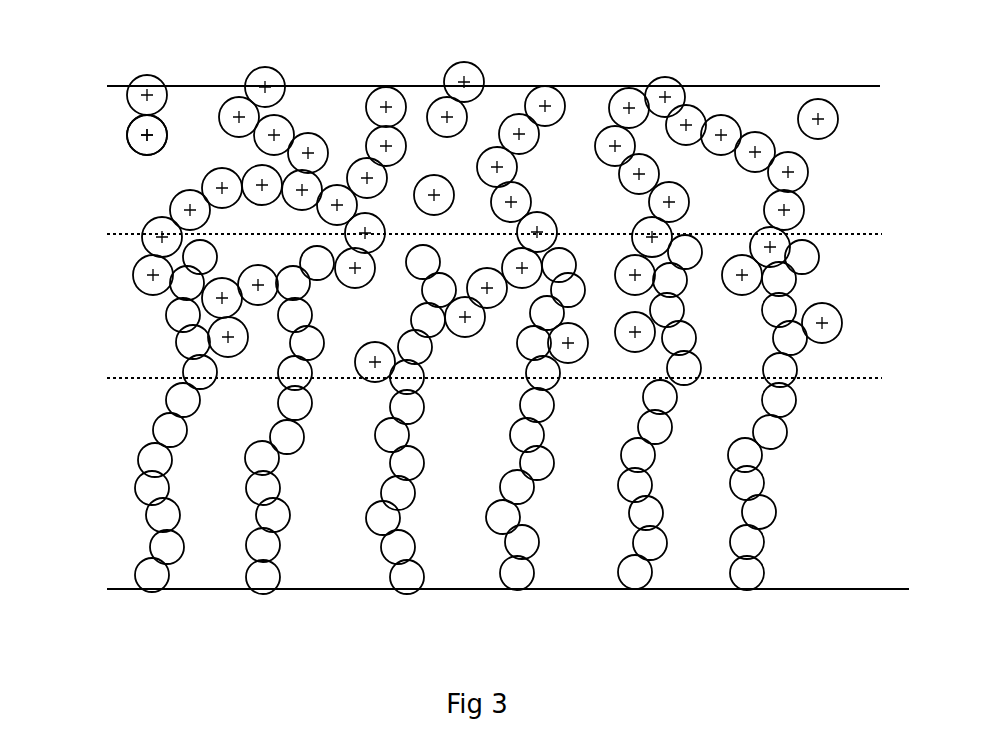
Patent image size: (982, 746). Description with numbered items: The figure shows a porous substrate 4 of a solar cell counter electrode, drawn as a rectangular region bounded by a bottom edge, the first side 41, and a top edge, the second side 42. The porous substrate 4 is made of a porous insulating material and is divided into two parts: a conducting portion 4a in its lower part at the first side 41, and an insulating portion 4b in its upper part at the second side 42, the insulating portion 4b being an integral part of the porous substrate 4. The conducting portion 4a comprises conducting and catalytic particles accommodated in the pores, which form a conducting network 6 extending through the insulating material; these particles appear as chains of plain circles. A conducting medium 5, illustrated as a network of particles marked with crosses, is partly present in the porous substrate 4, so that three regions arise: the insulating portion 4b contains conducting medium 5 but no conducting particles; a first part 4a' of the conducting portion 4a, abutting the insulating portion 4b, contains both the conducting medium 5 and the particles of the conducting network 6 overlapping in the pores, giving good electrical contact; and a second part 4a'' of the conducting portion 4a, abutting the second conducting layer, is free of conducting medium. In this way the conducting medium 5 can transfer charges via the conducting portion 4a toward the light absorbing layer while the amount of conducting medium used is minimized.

The porous substrate 4 is at (87, 88).
The conducting portion 4a is at (542, 414).
The first part of the conducting portion 4a' is at (512, 314).
The second part of the conducting portion 4a'' is at (506, 487).
The insulating portion 4b is at (863, 88).
The conducting medium 5 is at (126, 133).
The conducting network 6 is at (137, 457).
The first side 41 is at (691, 595).
The second side 42 is at (721, 80).